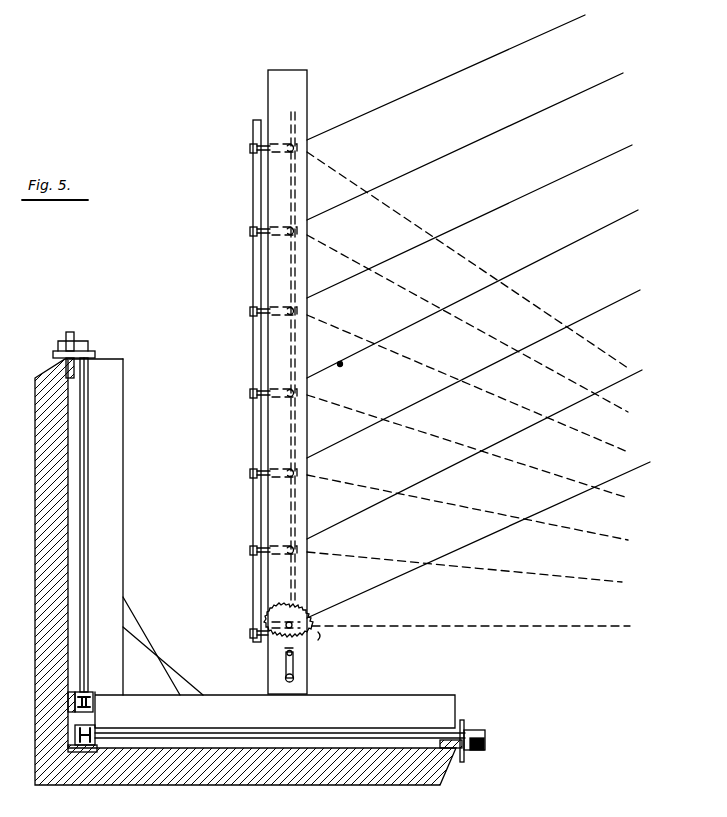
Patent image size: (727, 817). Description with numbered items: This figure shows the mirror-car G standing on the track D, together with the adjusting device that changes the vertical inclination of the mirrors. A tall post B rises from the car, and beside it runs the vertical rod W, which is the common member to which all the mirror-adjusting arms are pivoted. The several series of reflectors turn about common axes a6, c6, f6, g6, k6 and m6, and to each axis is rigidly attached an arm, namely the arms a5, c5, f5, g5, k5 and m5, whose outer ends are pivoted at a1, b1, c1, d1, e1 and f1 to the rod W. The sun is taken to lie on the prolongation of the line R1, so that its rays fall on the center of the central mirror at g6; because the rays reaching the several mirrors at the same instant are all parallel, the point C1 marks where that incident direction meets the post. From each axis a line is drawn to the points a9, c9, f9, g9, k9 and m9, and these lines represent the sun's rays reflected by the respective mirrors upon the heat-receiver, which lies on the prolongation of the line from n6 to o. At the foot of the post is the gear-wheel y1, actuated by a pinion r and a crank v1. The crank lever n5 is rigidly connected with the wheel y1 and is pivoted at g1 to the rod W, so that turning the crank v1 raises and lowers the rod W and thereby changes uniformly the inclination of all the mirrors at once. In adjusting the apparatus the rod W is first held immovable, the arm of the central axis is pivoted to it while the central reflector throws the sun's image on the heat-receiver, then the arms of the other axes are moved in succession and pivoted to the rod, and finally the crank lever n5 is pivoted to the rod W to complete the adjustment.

The scale post / column B is at (287, 382).
The track D is at (245, 572).
The car G is at (269, 547).
The rod W is at (253, 351).
The line of the sun's rays R1 is at (478, 316).
The focal point C' C1 is at (337, 367).
The clip a a5 is at (250, 148).
The pivot of arm on rod a1 is at (252, 156).
The axis of mirror series a6 is at (283, 134).
The end of reflected ray a9 is at (478, 263).
The arm c5 is at (250, 231).
The pivot of arm on rod b1 is at (252, 239).
The axis of mirror series c6 is at (283, 218).
The end of reflected ray c9 is at (477, 327).
The arm f5 is at (250, 311).
The pivot of arm on rod c1 is at (252, 319).
The axis of mirror series f6 is at (283, 298).
The end of reflected ray f9 is at (476, 387).
The arm g5 is at (250, 393).
The pin d' d1 is at (252, 401).
The center of the central mirror g6 is at (283, 383).
The end of reflected ray g9 is at (478, 450).
The clip k k5 is at (250, 473).
The pin e' e1 is at (252, 481).
The slide k k6 is at (283, 461).
The sight line k k9 is at (477, 510).
The clip m m5 is at (250, 550).
The pin f' f1 is at (252, 558).
The slide m m6 is at (283, 541).
The sight line m m9 is at (478, 571).
The crank lever n5 is at (250, 633).
The pin g' g1 is at (252, 641).
The axis of crank lever n6 is at (288, 620).
The heat-receiver direction point o is at (478, 626).
The crank v1 is at (295, 674).
The pinion r is at (283, 668).
The gear-wheel y1 is at (318, 637).